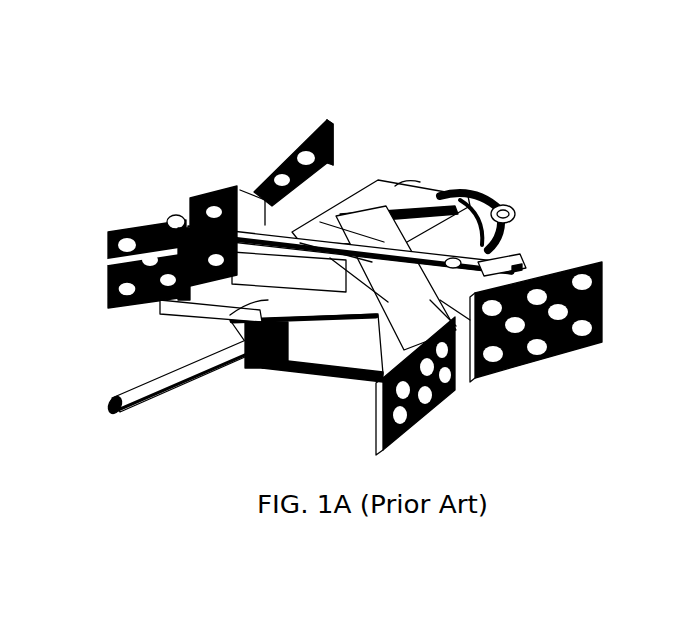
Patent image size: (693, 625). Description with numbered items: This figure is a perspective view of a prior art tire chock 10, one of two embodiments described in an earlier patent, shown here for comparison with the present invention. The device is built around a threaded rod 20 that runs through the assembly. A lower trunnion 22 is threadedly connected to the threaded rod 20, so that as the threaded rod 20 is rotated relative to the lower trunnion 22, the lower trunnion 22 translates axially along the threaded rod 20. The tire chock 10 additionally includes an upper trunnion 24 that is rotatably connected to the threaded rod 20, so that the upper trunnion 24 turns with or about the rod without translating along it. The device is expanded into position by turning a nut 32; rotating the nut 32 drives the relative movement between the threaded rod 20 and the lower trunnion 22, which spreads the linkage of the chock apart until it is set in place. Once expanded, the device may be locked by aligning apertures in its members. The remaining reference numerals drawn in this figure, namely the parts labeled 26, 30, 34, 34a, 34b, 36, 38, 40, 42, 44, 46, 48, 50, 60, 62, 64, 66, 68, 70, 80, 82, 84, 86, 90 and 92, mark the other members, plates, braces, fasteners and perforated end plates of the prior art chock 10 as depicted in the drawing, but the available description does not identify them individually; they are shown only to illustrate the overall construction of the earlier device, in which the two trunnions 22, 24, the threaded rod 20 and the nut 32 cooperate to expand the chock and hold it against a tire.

The tire chock 10 is at (495, 124).
The threaded rod 20 is at (107, 236).
The lower trunnion 22 is at (258, 362).
The upper trunnion 24 is at (342, 250).
The strut 26 is at (375, 250).
The nut 30 is at (518, 223).
The nut 32 is at (515, 197).
The beam 34 is at (378, 172).
The first end of beam 34a is at (240, 190).
The second end of beam 34b is at (395, 190).
The bracket 36 is at (500, 262).
The clamp 38 is at (467, 188).
The perforated plate 40 is at (180, 205).
The angled plate 42 is at (300, 154).
The fastener 44 is at (518, 267).
The hole 46 is at (450, 249).
The post 48 is at (218, 300).
The cross member 50 is at (340, 306).
The base member 60 is at (170, 304).
The lower beam 62 is at (350, 330).
The brace 64 is at (316, 270).
The brace 66 is at (450, 309).
The arm 68 is at (210, 331).
The lower plank 70 is at (318, 367).
The perforated end plate 80 is at (325, 128).
The pivot 82 is at (160, 215).
The hole 84 is at (106, 292).
The side plate 86 is at (108, 263).
The diagonal brace 90 is at (392, 306).
The strut 92 is at (344, 262).